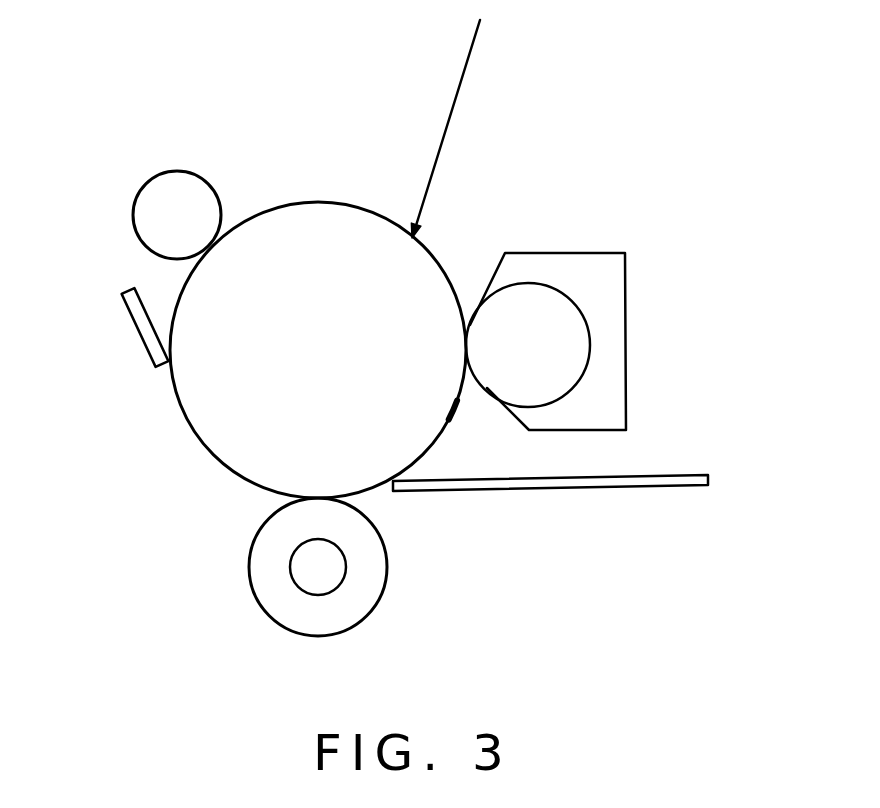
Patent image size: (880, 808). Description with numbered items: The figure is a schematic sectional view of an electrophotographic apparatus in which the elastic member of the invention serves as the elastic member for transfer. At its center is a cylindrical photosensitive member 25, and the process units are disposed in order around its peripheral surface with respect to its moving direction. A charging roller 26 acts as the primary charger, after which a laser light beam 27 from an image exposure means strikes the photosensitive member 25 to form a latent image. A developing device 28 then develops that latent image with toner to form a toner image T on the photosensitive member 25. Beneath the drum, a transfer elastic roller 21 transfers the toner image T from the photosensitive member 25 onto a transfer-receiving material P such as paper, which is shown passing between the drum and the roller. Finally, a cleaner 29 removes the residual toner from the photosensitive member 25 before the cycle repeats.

The transfer elastic roller 21 is at (387, 595).
The cylindrical photosensitive member 25 is at (208, 433).
The charging roller 26 is at (193, 188).
The laser light beam 27 is at (461, 90).
The developing device 28 is at (627, 330).
The cleaner 29 is at (127, 297).
The toner image T is at (455, 418).
The transfer-receiving material P is at (598, 488).